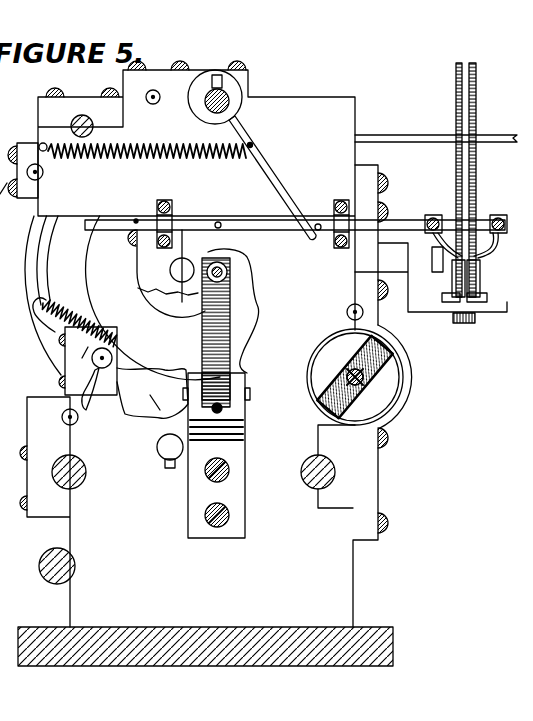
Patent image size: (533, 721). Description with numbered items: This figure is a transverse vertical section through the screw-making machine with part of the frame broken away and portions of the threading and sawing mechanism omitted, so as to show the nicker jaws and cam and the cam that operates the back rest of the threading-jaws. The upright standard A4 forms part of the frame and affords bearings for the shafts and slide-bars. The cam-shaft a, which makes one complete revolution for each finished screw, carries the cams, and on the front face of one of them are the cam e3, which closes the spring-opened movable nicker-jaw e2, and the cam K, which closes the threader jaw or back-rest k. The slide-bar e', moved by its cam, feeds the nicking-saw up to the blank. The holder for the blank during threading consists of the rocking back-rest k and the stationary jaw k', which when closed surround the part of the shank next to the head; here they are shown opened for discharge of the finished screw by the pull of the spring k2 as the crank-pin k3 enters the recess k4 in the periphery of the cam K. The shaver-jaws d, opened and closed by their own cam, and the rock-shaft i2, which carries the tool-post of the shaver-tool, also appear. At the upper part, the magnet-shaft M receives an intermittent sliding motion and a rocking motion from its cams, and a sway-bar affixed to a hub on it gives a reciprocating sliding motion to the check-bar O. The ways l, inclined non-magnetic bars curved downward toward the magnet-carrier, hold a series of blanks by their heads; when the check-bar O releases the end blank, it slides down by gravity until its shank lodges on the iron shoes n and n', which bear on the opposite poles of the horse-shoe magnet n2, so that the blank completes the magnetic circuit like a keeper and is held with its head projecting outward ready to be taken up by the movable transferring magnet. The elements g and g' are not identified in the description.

The upright standard A4 is at (258, 363).
The disc g is at (87, 123).
The magnet-shaft M is at (215, 97).
The lever arm g' is at (275, 178).
The check-bar O is at (296, 224).
The cam K is at (122, 302).
The cam e3 is at (171, 273).
The cam-shaft a is at (182, 270).
The movable nicker-jaw e2 is at (221, 393).
The slide-bar e' is at (170, 451).
The spring k2 is at (75, 321).
The threader jaw or back-rest k is at (91, 361).
The stationary jaw k' is at (94, 389).
The crank-pin k3 is at (152, 393).
The recess k4 is at (154, 400).
The shaver-jaws d is at (355, 377).
The rock-shaft i2 is at (326, 472).
The ways l is at (468, 180).
The iron shoe n is at (448, 267).
The iron shoe n' is at (482, 267).
The horse-shoe magnet n2 is at (485, 308).